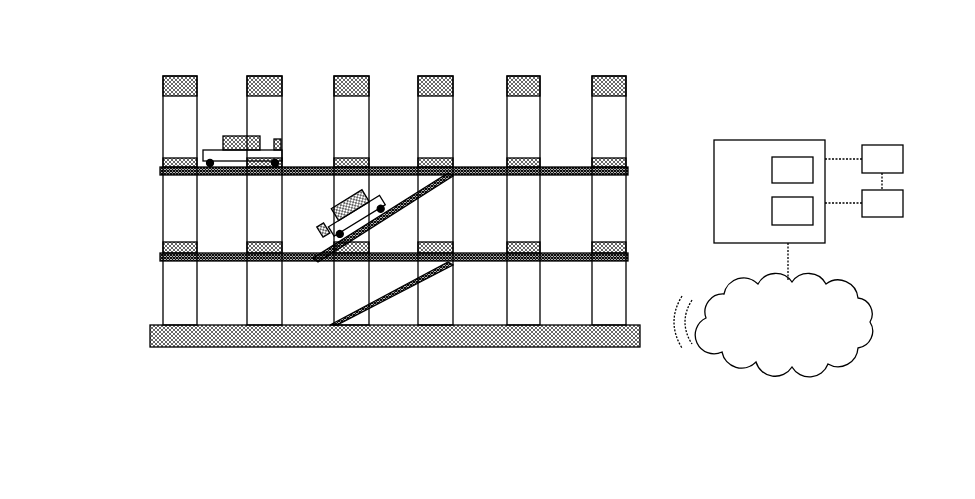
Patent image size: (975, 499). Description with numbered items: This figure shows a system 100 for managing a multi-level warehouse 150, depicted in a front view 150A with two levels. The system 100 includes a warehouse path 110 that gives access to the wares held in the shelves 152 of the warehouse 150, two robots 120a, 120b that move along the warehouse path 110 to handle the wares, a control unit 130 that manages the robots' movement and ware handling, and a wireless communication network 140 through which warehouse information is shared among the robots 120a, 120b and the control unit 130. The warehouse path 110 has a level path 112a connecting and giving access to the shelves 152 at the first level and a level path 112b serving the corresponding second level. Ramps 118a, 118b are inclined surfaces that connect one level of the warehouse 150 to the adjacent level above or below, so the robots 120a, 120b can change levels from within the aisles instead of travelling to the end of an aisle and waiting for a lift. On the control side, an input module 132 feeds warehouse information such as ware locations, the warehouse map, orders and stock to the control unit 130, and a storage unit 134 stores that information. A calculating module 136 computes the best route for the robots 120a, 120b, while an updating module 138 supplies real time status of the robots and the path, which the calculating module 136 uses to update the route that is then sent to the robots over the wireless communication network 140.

The system 100 is at (87, 68).
The warehouse path 110 is at (160, 172).
The level path 112a is at (628, 172).
The level path 112b is at (628, 258).
The ramp 118a is at (397, 210).
The ramp 118b is at (383, 294).
The robot 120a is at (233, 134).
The robot 120b is at (333, 208).
The control unit 130 is at (788, 210).
The input module 132 is at (882, 167).
The storage unit 134 is at (792, 170).
The calculating module 136 is at (792, 211).
The updating module 138 is at (882, 203).
The wireless communication network 140 is at (773, 324).
The multi-level warehouse 150 is at (173, 48).
The front view 150A is at (658, 87).
The shelves 152 is at (578, 108).